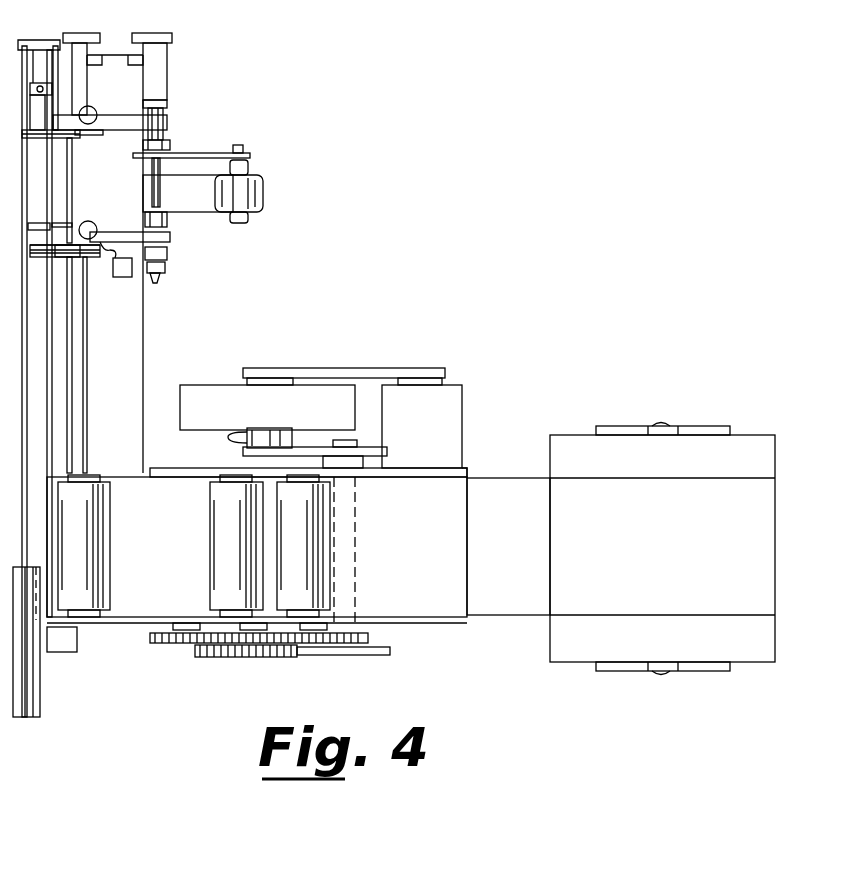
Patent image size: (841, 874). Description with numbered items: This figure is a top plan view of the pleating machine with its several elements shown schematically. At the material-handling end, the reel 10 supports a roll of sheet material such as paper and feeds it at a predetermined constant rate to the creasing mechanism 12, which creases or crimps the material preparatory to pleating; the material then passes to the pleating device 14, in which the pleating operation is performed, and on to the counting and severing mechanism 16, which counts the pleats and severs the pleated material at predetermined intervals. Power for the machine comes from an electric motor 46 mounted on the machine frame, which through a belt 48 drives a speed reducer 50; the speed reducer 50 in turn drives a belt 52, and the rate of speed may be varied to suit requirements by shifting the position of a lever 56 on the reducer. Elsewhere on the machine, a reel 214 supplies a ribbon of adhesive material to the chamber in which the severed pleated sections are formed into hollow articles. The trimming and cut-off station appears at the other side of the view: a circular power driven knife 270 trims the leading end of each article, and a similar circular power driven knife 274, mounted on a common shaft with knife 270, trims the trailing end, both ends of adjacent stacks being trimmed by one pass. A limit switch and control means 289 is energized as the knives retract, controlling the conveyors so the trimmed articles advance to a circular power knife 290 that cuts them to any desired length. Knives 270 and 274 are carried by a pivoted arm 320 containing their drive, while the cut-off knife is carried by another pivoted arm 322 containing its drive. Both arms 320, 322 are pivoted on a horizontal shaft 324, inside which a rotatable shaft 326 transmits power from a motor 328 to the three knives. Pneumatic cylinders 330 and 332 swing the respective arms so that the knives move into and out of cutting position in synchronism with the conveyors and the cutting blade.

The reel 10 is at (622, 418).
The creasing mechanism 12 is at (304, 550).
The pleating device 14 is at (237, 550).
The counting and severing mechanism 16 is at (82, 549).
The electric motor 46 is at (450, 440).
The belt 48 is at (335, 373).
The speed reducer 50 is at (207, 388).
The belt 52 is at (247, 452).
The lever 56 is at (233, 435).
The adhesive reel 214 is at (32, 693).
The circular power driven knife 270 is at (90, 257).
The circular power driven knife 274 is at (107, 252).
The limit switch and control means 289 is at (125, 272).
The circular power knife 290 is at (100, 128).
The pivoted arm 320 is at (123, 238).
The pivoted arm 322 is at (163, 125).
The horizontal shaft 324 is at (168, 142).
The rotatable shaft 326 is at (160, 188).
The motor 328 is at (265, 195).
The pneumatic cylinder 330 is at (90, 222).
The pneumatic cylinder 332 is at (88, 106).